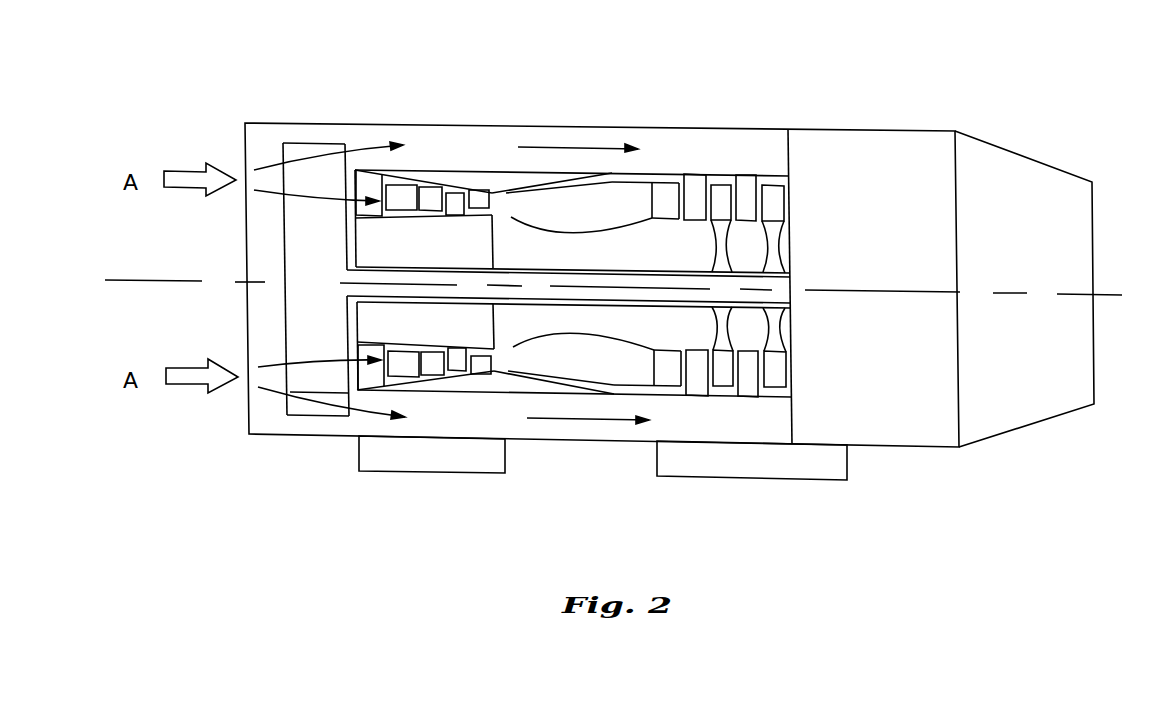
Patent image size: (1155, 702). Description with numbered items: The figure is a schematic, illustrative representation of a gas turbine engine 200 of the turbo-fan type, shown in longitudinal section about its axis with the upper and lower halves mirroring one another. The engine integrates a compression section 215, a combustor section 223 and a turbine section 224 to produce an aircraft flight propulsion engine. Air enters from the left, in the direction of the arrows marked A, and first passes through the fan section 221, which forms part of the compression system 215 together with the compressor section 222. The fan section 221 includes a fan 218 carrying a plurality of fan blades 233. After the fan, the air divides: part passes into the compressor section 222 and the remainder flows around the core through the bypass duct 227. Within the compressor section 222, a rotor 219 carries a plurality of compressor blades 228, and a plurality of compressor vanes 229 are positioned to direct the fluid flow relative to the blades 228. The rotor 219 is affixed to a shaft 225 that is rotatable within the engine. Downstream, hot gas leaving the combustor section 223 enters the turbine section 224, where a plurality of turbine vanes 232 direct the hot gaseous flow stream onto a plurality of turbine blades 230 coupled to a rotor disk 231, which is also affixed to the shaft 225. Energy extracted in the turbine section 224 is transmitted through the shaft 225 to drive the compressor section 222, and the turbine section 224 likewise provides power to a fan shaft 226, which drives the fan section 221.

The gas turbine engine 200 is at (772, 62).
The compression section 215 is at (427, 473).
The fan 218 is at (315, 305).
The rotor 219 is at (378, 251).
The fan section 221 is at (313, 413).
The compressor section 222 is at (390, 373).
The combustor section 223 is at (557, 173).
The turbine section 224 is at (805, 478).
The shaft 225 is at (505, 267).
The fan shaft 226 is at (590, 298).
The bypass duct 227 is at (377, 425).
The compressor blades 228 is at (403, 200).
The compressor vanes 229 is at (363, 182).
The turbine blades 230 is at (725, 375).
The rotor disk 231 is at (727, 330).
The turbine vanes 232 is at (697, 390).
The fan blades 233 is at (303, 182).